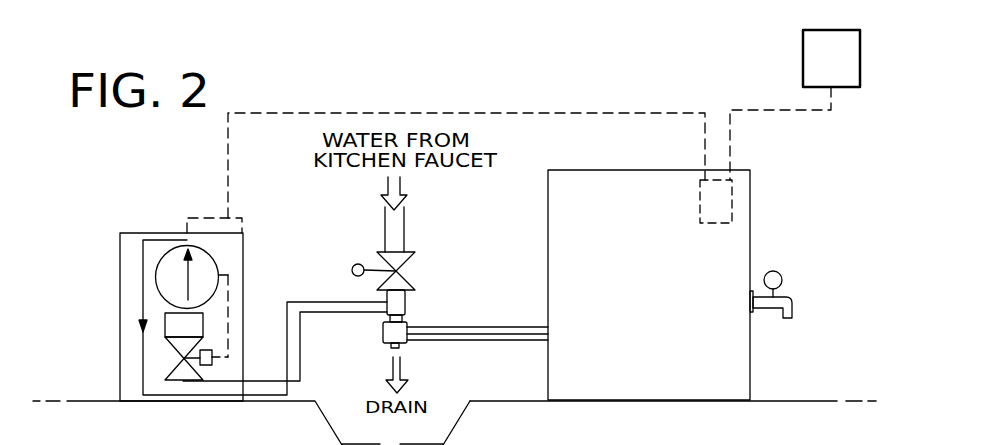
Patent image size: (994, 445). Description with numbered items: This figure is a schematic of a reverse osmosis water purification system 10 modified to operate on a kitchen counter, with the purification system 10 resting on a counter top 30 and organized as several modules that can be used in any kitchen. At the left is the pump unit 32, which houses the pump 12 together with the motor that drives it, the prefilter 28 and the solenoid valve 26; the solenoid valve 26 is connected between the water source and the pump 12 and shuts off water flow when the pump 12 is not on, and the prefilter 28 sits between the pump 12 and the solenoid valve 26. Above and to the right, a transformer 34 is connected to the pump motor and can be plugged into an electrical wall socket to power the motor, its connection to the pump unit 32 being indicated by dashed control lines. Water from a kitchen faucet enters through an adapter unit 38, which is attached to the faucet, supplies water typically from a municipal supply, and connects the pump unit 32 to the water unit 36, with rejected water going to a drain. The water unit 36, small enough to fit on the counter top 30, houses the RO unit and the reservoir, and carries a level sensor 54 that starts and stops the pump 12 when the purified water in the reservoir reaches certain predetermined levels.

The reverse osmosis water purification system 10 is at (530, 132).
The pump 12 is at (192, 277).
The solenoid valve 26 is at (183, 367).
The prefilter 28 is at (184, 326).
The counter top 30 is at (454, 423).
The pump unit 32 is at (123, 247).
The transformer 34 is at (831, 58).
The water unit 36 is at (670, 285).
The adapter unit 38 is at (398, 302).
The level sensor 54 is at (733, 200).